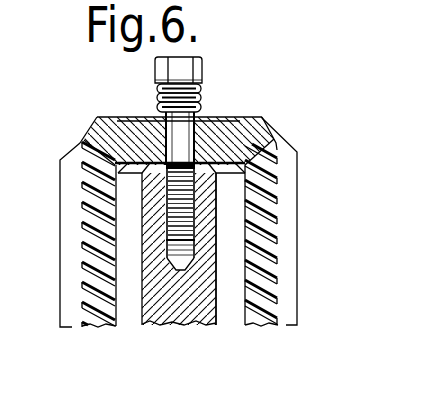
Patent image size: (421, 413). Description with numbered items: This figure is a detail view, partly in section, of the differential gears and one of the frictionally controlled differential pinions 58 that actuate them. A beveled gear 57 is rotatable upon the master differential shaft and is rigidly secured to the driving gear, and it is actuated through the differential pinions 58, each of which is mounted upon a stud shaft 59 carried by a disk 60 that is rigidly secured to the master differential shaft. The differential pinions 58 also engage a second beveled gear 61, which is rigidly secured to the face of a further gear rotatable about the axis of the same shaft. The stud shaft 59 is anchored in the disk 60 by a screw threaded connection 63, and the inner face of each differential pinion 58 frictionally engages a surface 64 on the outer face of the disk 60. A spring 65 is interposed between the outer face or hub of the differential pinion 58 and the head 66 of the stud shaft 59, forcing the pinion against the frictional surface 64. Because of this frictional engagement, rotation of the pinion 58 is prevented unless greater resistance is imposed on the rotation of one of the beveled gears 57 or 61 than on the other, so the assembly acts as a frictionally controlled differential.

The beveled gear 57 is at (290, 265).
The differential pinion 58 is at (260, 130).
The stud shaft 59 is at (183, 127).
The disk 60 is at (216, 323).
The beveled gear 61 is at (73, 200).
The screw threaded connection 63 is at (165, 217).
The frictional surface 64 is at (270, 127).
The spring 65 is at (200, 92).
The head 66 is at (196, 64).